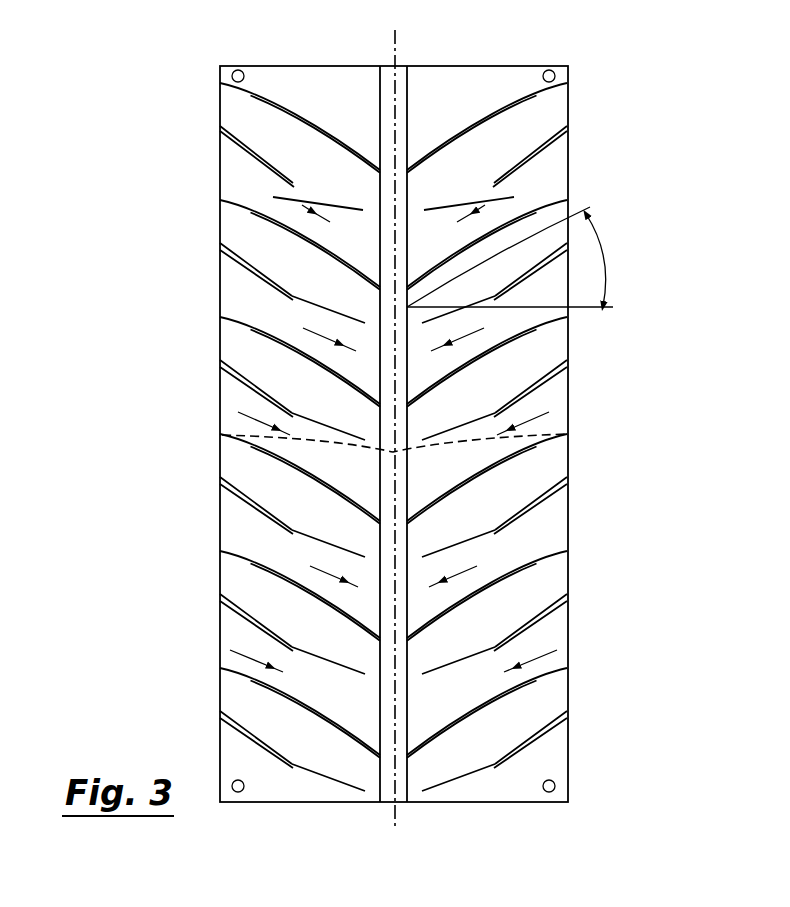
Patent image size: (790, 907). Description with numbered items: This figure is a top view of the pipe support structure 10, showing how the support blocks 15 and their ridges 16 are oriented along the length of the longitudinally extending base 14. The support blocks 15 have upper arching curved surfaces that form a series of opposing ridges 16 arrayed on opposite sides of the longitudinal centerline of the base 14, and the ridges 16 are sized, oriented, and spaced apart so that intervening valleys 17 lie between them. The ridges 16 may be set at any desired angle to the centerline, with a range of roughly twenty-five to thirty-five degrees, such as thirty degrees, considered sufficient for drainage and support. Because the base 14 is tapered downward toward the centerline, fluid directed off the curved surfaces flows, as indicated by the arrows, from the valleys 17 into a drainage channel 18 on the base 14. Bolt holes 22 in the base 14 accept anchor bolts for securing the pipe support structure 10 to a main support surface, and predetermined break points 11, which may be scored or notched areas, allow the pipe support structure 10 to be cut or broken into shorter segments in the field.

The pipe support structure 10 is at (196, 334).
The predetermined break points 11 is at (246, 434).
The base 14 is at (556, 748).
The support blocks 15 is at (293, 140).
The ridges 16 is at (256, 228).
The valleys 17 is at (553, 177).
The drainage channel 18 is at (400, 793).
The bolt holes 22 is at (238, 69).